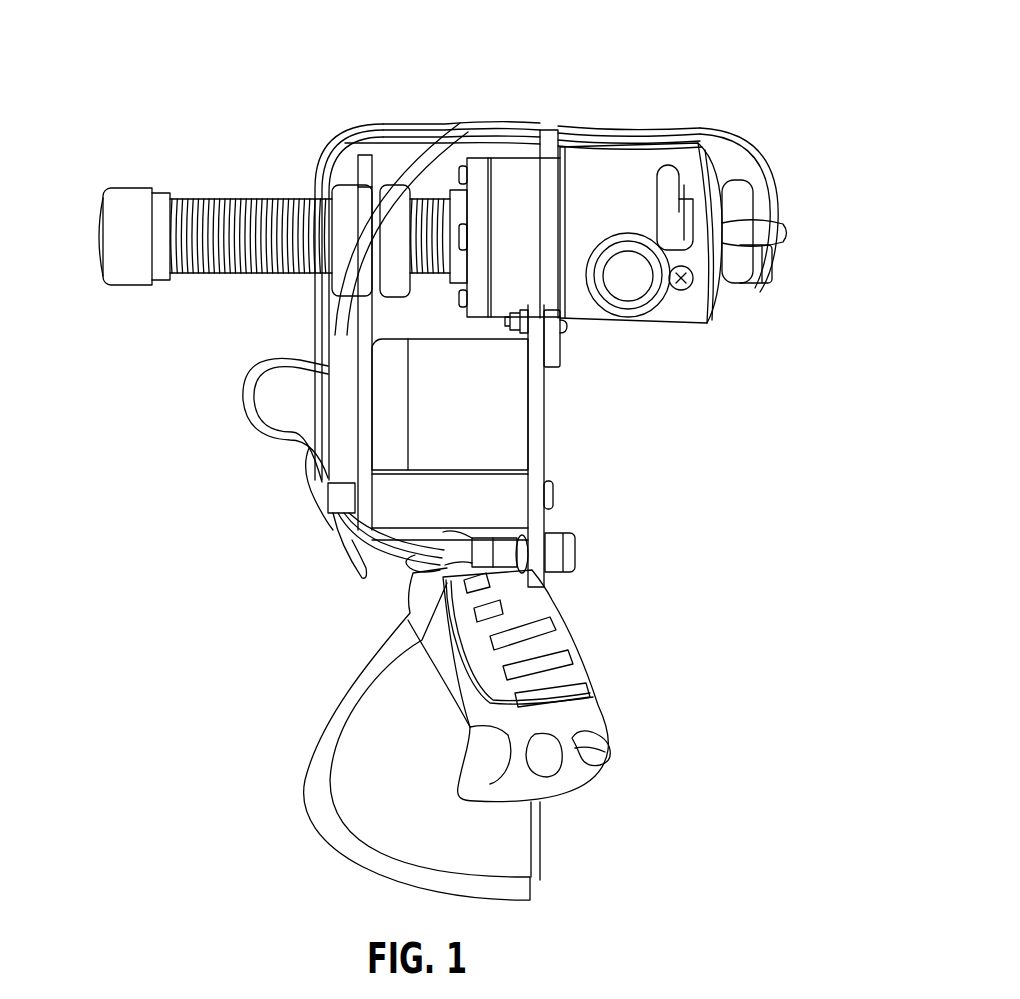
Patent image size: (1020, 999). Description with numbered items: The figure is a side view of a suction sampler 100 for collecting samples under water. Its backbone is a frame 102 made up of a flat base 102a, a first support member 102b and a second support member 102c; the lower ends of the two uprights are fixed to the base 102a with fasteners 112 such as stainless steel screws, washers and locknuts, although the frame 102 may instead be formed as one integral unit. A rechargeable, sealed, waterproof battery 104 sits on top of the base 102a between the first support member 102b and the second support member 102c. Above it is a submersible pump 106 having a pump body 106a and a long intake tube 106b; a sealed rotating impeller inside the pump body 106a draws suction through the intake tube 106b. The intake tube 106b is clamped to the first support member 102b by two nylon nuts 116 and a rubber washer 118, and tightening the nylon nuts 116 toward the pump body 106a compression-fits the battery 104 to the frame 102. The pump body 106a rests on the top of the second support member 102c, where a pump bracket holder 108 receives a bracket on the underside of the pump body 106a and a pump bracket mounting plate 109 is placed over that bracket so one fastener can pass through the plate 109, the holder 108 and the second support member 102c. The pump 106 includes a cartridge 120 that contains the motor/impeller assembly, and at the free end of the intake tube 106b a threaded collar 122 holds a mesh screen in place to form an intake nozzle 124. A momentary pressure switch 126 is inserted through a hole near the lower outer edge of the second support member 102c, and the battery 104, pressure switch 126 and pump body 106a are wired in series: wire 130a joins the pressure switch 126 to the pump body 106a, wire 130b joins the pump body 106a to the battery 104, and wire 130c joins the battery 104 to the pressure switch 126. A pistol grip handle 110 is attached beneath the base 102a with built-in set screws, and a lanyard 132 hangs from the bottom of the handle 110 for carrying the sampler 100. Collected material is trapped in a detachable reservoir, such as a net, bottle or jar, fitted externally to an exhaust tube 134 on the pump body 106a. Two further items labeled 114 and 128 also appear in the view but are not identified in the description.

The suction sampler 100 is at (693, 53).
The frame 102 is at (537, 462).
The base 102a is at (350, 573).
The first support member 102b is at (360, 518).
The second support member 102c is at (537, 425).
The battery 104 is at (383, 368).
The submersible pump 106 is at (698, 167).
The pump body 106a is at (703, 321).
The intake tube 106b is at (224, 200).
The pump bracket holder 108 is at (552, 358).
The pump bracket mounting plate 109 is at (565, 325).
The handle 110 is at (578, 778).
The fasteners 112 is at (553, 495).
The post 114 is at (367, 157).
The nylon nuts 116 is at (342, 194).
The rubber washer 118 is at (396, 142).
The cartridge 120 is at (738, 282).
The threaded collar 122 is at (112, 200).
The intake nozzle 124 is at (97, 235).
The pressure switch 126 is at (568, 553).
The clamp ring 128 is at (530, 562).
The wire 130a is at (352, 137).
The wire 130b is at (458, 135).
The wire 130c is at (243, 407).
The lanyard 132 is at (320, 788).
The exhaust tube 134 is at (640, 307).